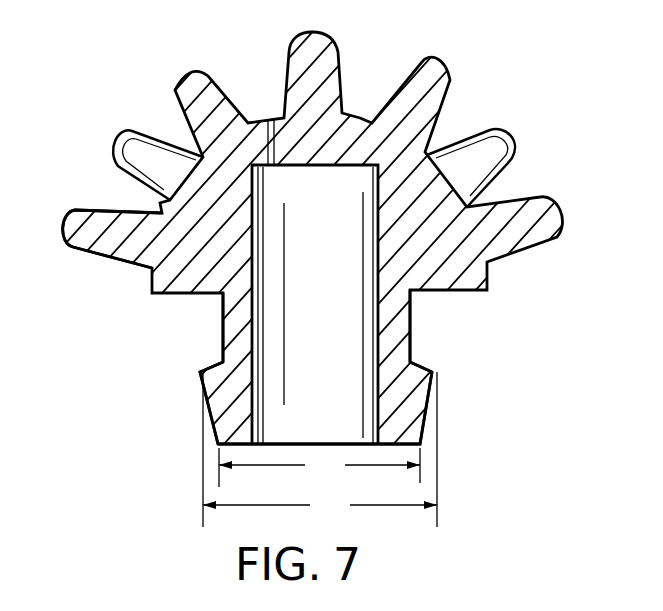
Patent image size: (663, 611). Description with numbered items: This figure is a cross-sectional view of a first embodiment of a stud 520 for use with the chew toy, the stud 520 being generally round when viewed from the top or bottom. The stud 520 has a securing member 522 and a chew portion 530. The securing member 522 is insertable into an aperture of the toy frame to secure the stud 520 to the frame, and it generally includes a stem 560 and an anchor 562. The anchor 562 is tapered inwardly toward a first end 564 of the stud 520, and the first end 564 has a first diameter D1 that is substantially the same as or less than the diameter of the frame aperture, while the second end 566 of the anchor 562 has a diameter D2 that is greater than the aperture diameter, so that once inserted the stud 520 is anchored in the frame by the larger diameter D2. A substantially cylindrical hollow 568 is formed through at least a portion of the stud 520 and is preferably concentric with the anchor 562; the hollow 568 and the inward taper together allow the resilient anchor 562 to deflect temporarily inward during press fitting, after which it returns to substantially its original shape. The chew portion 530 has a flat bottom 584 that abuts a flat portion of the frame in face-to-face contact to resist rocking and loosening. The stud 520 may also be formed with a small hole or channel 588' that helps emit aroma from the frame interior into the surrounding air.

The stud 520 is at (370, 90).
The securing member 522 is at (412, 318).
The chew portion 530 is at (433, 153).
The stem 560 is at (223, 323).
The anchor 562 is at (217, 400).
The first end 564 is at (423, 447).
The second end 566 is at (435, 371).
The hollow 568 is at (200, 157).
The flat bottom 584 is at (153, 300).
The hole or channel 588' is at (228, 82).
The first diameter D1 is at (319, 467).
The second diameter D2 is at (320, 449).